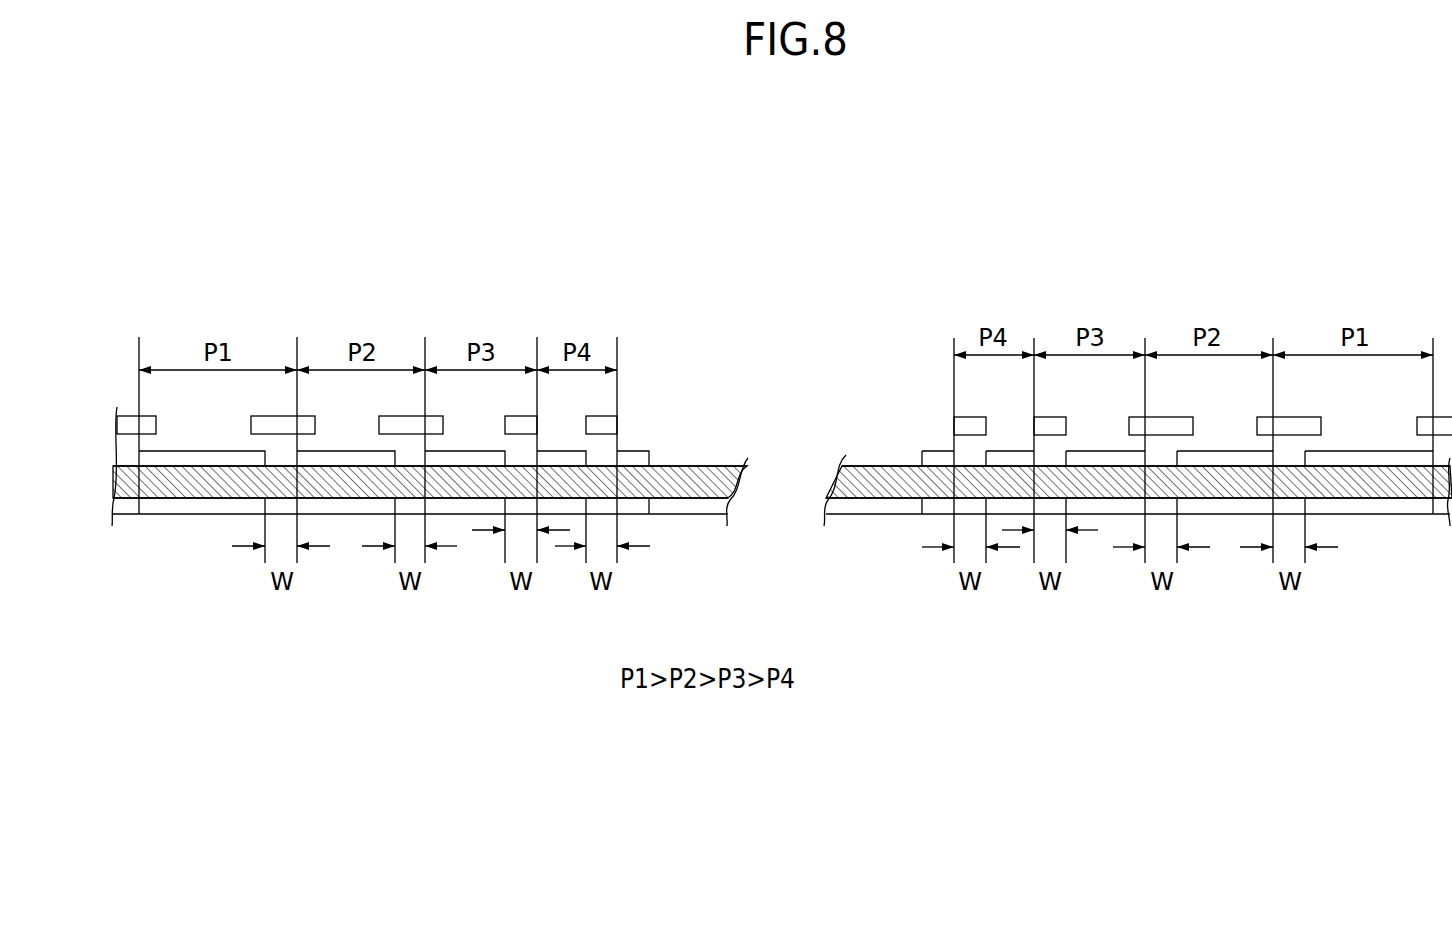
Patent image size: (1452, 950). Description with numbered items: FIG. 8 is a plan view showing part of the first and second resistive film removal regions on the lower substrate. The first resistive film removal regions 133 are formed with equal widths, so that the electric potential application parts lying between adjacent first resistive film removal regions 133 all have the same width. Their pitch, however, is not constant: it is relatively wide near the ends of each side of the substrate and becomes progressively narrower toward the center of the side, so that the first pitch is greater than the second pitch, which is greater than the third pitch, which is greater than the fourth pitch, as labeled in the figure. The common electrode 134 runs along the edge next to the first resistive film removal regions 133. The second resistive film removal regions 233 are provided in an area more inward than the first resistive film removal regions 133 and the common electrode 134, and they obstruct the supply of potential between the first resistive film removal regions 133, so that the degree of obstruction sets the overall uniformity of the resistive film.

The first resistive film removal region 133 is at (154, 515).
The common electrode 134 is at (720, 466).
The second resistive film removal region 233 is at (603, 416).